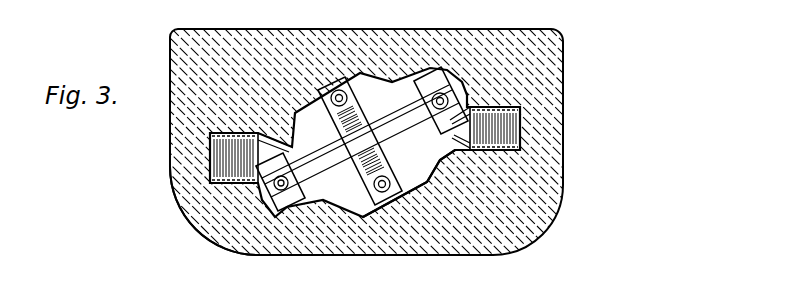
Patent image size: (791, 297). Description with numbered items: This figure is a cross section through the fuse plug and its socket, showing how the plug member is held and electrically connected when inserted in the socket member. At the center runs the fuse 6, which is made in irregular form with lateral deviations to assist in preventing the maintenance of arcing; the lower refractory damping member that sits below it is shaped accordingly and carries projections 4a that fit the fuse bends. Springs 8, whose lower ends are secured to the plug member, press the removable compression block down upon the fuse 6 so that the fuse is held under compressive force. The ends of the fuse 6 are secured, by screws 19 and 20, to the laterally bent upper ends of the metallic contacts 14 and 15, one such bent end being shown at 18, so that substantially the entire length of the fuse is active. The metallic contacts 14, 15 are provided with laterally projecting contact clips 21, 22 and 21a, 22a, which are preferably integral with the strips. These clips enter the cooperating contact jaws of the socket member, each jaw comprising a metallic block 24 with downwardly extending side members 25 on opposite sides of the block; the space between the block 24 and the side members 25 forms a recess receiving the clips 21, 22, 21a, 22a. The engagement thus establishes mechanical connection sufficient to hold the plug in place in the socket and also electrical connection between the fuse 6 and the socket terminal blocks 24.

The projection 4a is at (370, 124).
The fuse 6 is at (400, 128).
The spring 8 is at (338, 85).
The metallic contact 14 is at (452, 160).
The metallic contact 15 is at (190, 216).
The laterally bent upper end of contact 18 is at (215, 238).
The screw 19 is at (436, 82).
The screw 20 is at (290, 208).
The contact clip 21 is at (517, 110).
The contact clip 21a is at (258, 190).
The contact clip 22 is at (520, 148).
The contact clip 22a is at (210, 150).
The metallic block 24 is at (212, 163).
The side member 25 is at (217, 132).